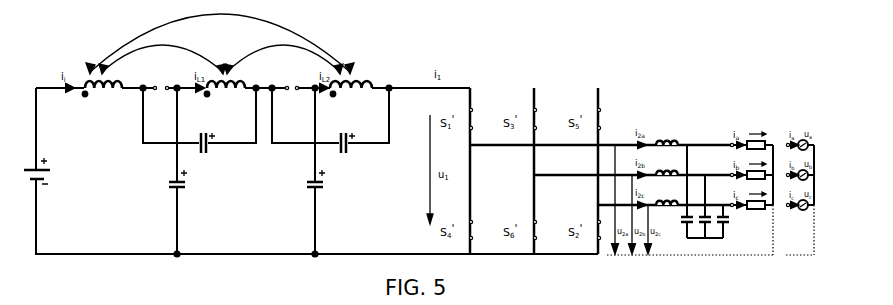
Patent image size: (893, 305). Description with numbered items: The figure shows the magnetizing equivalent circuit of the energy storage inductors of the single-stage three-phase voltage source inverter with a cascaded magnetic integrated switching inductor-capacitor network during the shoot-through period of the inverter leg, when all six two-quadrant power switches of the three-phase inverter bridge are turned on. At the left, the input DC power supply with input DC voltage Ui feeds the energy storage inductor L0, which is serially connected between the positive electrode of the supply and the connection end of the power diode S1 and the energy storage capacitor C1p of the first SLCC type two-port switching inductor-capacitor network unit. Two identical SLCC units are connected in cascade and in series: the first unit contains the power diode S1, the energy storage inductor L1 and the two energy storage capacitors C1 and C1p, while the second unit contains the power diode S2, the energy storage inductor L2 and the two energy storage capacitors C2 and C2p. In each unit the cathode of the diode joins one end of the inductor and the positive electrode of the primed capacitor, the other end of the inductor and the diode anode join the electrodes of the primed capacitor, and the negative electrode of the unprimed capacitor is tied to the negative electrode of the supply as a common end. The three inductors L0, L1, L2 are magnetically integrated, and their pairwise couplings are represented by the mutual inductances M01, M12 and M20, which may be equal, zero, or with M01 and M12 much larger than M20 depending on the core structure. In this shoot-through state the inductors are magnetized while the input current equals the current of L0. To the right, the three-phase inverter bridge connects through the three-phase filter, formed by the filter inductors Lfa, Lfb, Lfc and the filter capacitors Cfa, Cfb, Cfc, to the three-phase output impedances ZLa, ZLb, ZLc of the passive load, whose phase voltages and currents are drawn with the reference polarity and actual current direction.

The input DC voltage Ui is at (28, 172).
The energy storage inductor L0 is at (103, 96).
The energy storage inductor L1 is at (226, 96).
The energy storage inductor L2 is at (351, 96).
The power diode S1 is at (160, 77).
The power diode S2 is at (292, 77).
The energy storage capacitor C1 is at (180, 183).
The energy storage capacitor C2 is at (318, 183).
The energy storage capacitor C1p is at (216, 141).
The energy storage capacitor C2p is at (356, 141).
The mutual inductance M20 is at (220, 40).
The mutual inductance M01 is at (162, 56).
The mutual inductance M12 is at (283, 56).
The filter inductor Lfa is at (667, 137).
The filter inductor Lfb is at (667, 167).
The filter inductor Lfc is at (667, 197).
The filter capacitor Cfa is at (682, 191).
The filter capacitor Cfb is at (700, 206).
The filter capacitor Cfc is at (718, 221).
The three-phase output impedance of passive load ZLa is at (759, 144).
The three-phase output impedance of passive load ZLb is at (759, 174).
The three-phase output impedance of passive load ZLc is at (758, 204).